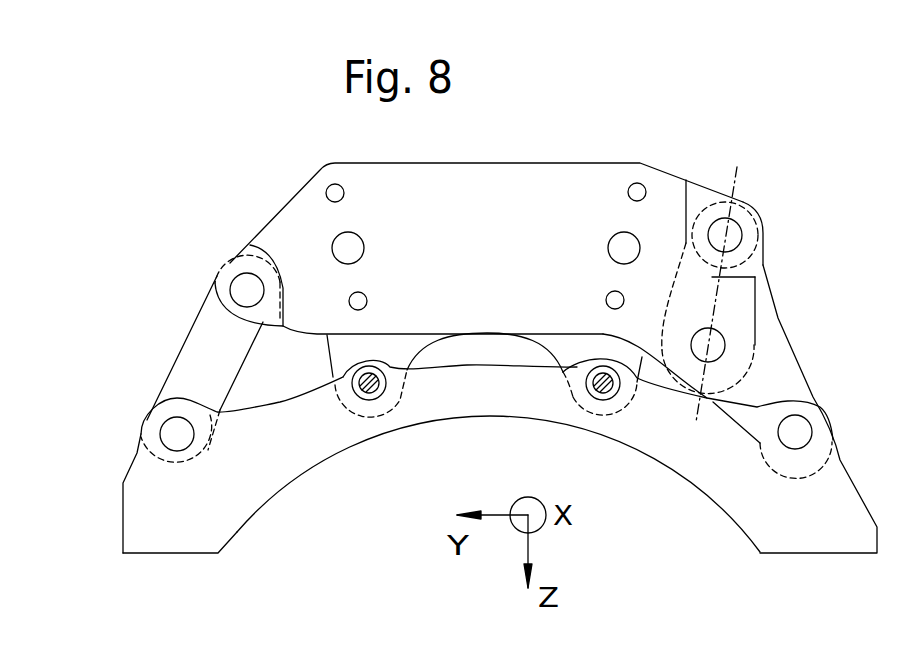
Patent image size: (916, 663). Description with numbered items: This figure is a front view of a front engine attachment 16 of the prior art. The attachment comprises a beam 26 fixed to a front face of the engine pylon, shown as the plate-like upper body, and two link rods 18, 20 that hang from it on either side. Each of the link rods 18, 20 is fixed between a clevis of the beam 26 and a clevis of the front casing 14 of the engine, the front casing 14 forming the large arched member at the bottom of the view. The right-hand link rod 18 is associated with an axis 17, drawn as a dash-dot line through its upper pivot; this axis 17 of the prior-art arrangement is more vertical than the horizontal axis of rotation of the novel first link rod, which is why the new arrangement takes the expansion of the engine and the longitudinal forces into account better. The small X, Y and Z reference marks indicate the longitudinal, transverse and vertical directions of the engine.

The front casing 14 is at (702, 468).
The front engine attachment 16 is at (775, 195).
The axis 17 is at (733, 183).
The link rod 18 is at (763, 343).
The link rod 20 is at (202, 360).
The beam 26 is at (508, 252).